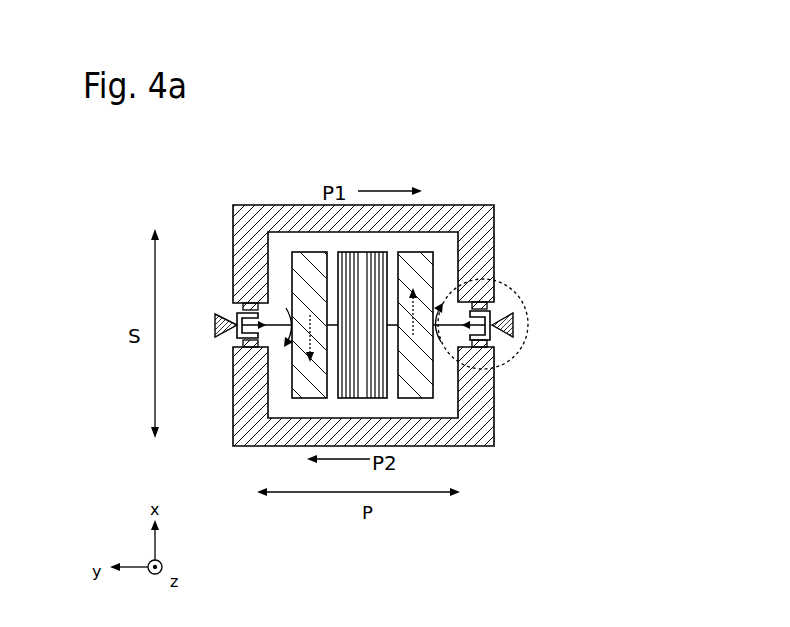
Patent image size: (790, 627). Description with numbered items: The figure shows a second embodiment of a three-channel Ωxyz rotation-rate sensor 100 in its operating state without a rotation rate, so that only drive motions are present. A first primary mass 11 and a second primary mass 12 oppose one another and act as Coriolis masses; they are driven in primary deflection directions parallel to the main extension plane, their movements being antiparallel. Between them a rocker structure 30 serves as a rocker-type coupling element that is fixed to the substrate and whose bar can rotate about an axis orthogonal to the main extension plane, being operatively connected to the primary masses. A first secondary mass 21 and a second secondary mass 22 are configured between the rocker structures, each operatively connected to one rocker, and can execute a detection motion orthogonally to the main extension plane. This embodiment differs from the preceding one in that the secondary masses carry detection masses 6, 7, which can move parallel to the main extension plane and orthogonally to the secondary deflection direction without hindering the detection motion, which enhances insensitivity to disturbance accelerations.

The rotation-rate sensor 100 is at (560, 154).
The first primary mass 11 is at (235, 236).
The second primary mass 12 is at (246, 411).
The first secondary mass 21 is at (292, 268).
The second secondary mass 22 is at (434, 268).
The detection mass 6 is at (340, 382).
The second connection element 7 is at (387, 380).
The rocker structure 30 is at (528, 304).